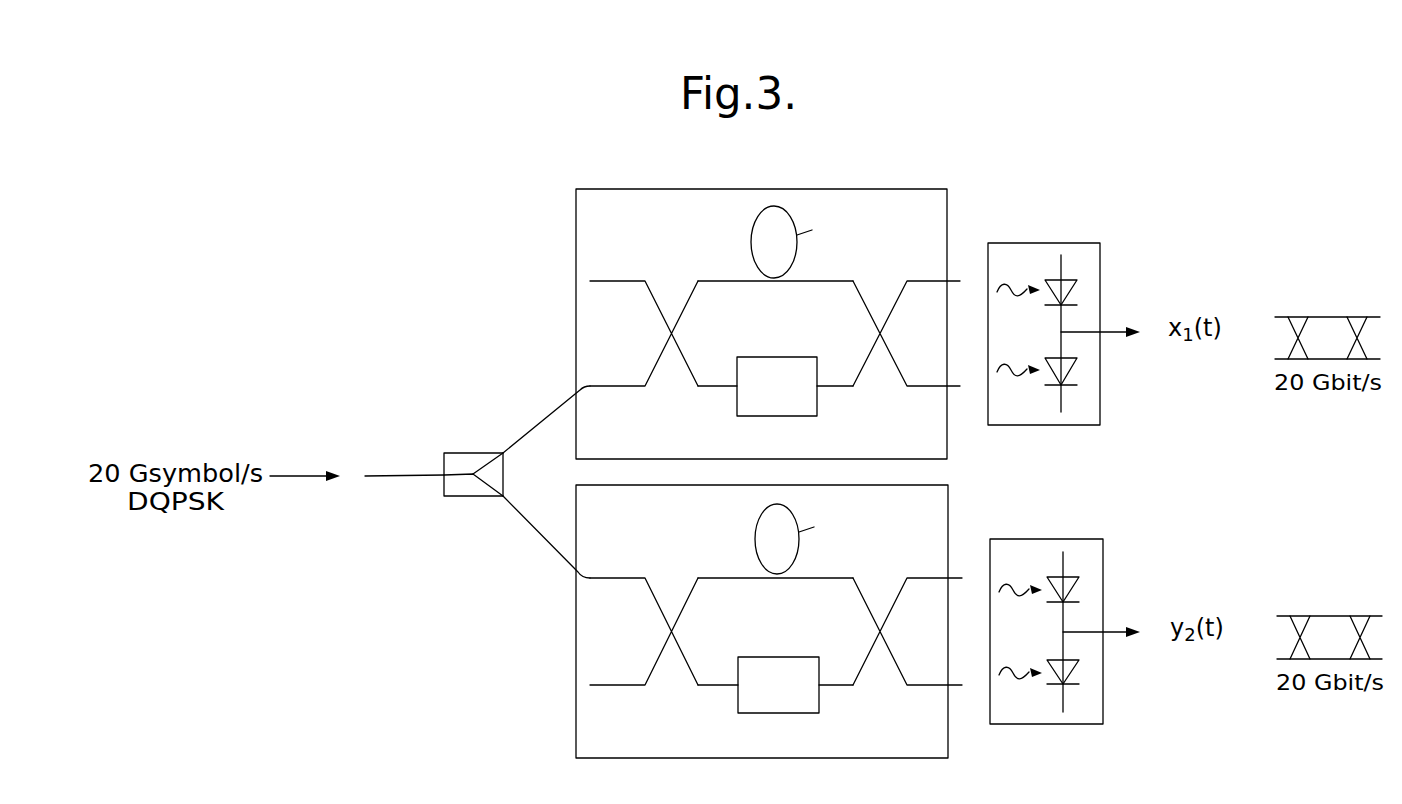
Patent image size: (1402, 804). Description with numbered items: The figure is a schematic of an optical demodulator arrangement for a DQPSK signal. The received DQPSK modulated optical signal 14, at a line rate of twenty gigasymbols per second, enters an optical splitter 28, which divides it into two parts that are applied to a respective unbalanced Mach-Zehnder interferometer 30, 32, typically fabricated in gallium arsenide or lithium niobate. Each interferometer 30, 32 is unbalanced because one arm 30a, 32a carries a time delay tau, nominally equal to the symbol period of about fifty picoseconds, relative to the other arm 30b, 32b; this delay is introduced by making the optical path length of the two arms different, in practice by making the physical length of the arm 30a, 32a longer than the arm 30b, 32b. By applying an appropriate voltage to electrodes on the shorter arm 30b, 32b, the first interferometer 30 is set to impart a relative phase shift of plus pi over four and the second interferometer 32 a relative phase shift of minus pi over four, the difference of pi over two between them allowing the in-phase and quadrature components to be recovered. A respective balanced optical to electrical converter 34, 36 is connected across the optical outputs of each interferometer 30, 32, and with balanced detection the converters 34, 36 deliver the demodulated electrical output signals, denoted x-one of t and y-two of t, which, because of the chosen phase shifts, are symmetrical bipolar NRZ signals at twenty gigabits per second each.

The received DQPSK modulated optical signal 14 is at (293, 476).
The optical splitter 28 is at (460, 497).
The unbalanced Mach-Zehnder interferometer 30 is at (768, 304).
The arm of first MZI 30a is at (720, 281).
The shorter arm of first MZI 30b is at (713, 388).
The unbalanced Mach-Zehnder interferometer 32 is at (769, 644).
The arm of second MZI 32a is at (713, 578).
The shorter arm of second MZI 32b is at (761, 698).
The balanced optical to electrical converter 34 is at (1100, 255).
The balanced optical to electrical converter 36 is at (1103, 557).